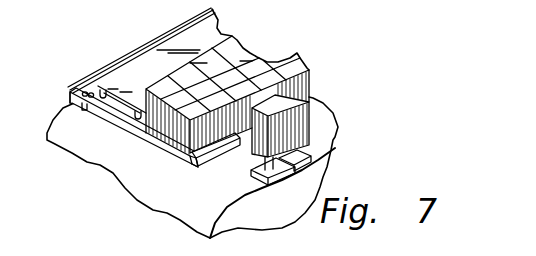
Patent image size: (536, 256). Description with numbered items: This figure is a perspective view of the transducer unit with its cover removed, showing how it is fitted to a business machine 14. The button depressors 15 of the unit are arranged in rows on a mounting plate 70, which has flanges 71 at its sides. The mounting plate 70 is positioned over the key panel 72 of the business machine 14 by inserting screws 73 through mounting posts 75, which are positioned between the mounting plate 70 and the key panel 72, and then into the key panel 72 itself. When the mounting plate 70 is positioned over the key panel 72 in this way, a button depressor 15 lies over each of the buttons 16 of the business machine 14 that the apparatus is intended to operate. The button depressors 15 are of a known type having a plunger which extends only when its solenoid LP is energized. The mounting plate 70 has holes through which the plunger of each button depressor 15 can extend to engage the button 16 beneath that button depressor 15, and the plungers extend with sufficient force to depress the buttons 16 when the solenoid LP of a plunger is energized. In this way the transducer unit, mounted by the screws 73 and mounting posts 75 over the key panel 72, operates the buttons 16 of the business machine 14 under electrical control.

The business machine 14 is at (123, 200).
The mounting plate 70 is at (126, 120).
The flanges 71 is at (70, 101).
The screws 73 is at (85, 91).
The mounting posts 75 is at (87, 110).
The solenoid LP is at (297, 50).
The button depressors 15 is at (190, 164).
The buttons 16 is at (206, 160).
The key panel 72 is at (208, 175).